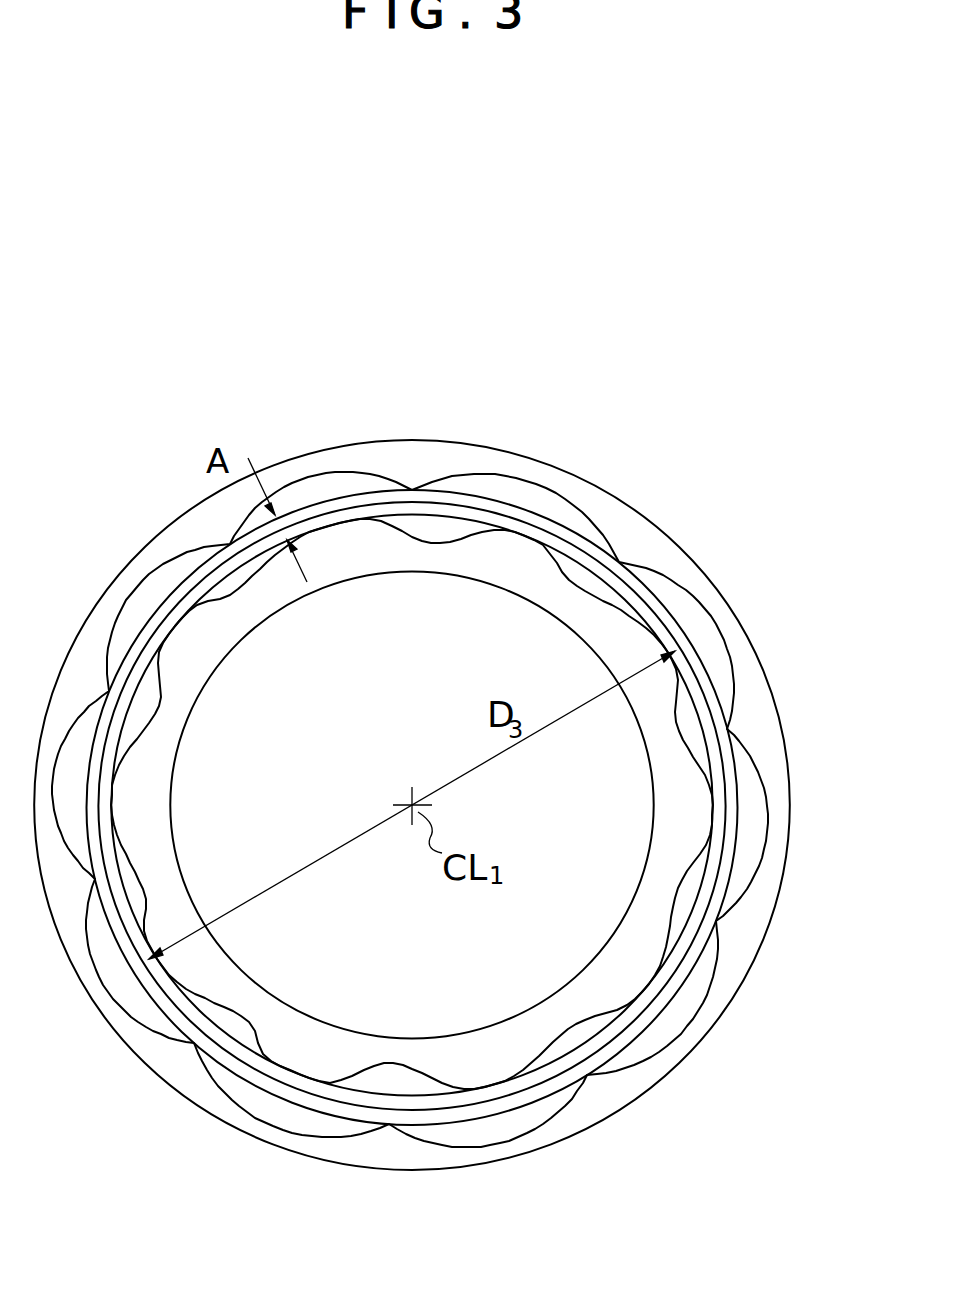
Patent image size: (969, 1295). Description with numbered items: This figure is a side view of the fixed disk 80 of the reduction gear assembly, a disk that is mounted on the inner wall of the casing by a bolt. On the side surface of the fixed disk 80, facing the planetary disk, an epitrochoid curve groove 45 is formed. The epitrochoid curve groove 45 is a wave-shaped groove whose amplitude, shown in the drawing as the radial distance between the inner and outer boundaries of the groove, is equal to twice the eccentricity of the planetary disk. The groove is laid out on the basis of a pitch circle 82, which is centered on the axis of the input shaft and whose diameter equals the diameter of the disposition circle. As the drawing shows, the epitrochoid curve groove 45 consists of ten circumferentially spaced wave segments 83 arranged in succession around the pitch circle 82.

The epitrochoid curve groove 45 is at (558, 492).
The fixed disk 80 is at (792, 747).
The pitch circle 82 is at (667, 622).
The wave segments 83 is at (760, 874).